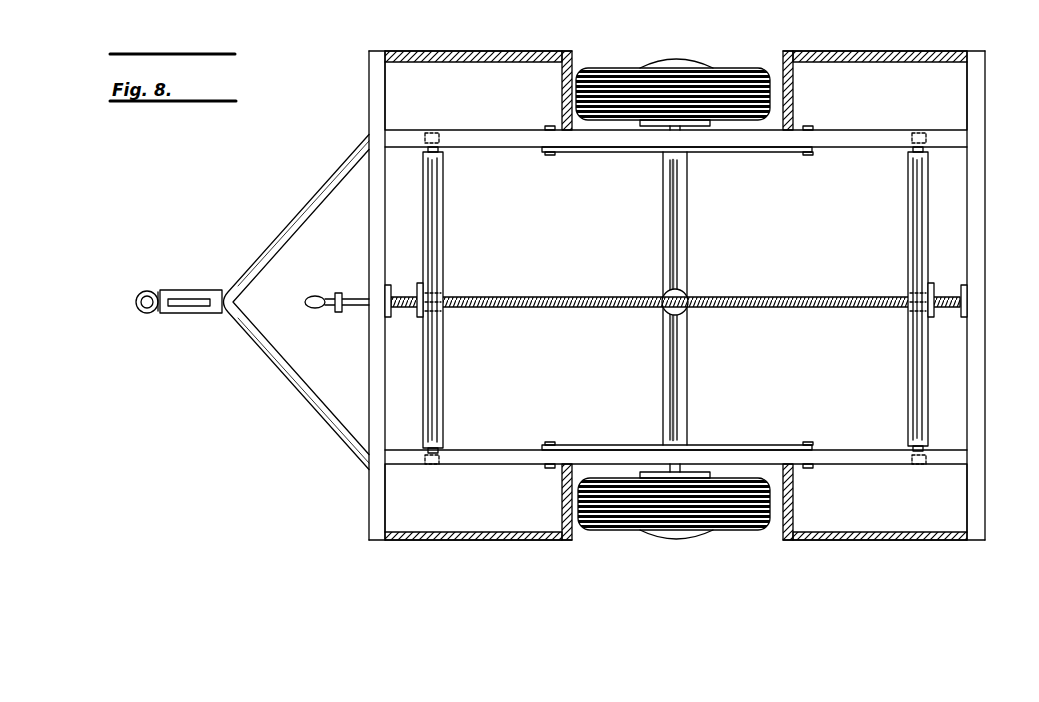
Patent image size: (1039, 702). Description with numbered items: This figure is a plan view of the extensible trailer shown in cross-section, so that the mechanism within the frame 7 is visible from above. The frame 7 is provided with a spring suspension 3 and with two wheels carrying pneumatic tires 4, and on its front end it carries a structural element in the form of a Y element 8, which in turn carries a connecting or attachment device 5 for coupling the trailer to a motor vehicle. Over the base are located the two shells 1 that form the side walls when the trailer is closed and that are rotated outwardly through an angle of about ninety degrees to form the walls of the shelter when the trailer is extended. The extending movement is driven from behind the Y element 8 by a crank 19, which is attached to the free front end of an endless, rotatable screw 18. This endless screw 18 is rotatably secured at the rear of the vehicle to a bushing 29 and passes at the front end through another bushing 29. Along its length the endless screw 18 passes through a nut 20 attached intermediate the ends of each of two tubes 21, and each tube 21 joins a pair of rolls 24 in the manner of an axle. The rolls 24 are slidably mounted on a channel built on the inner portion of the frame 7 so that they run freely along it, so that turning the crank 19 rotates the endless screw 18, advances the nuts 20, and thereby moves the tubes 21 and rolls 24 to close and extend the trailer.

The shells 1 is at (488, 52).
The spring suspension 3 is at (614, 153).
The pneumatic tires 4 is at (731, 72).
The connecting or attachment device 5 is at (164, 290).
The frame 7 is at (369, 237).
The Y element 8 is at (292, 210).
The endless screw 18 is at (545, 297).
The crank 19 is at (338, 293).
The nut 20 is at (418, 312).
The tubes 21 is at (443, 226).
The rolls 24 is at (440, 143).
The bushing 29 is at (389, 285).